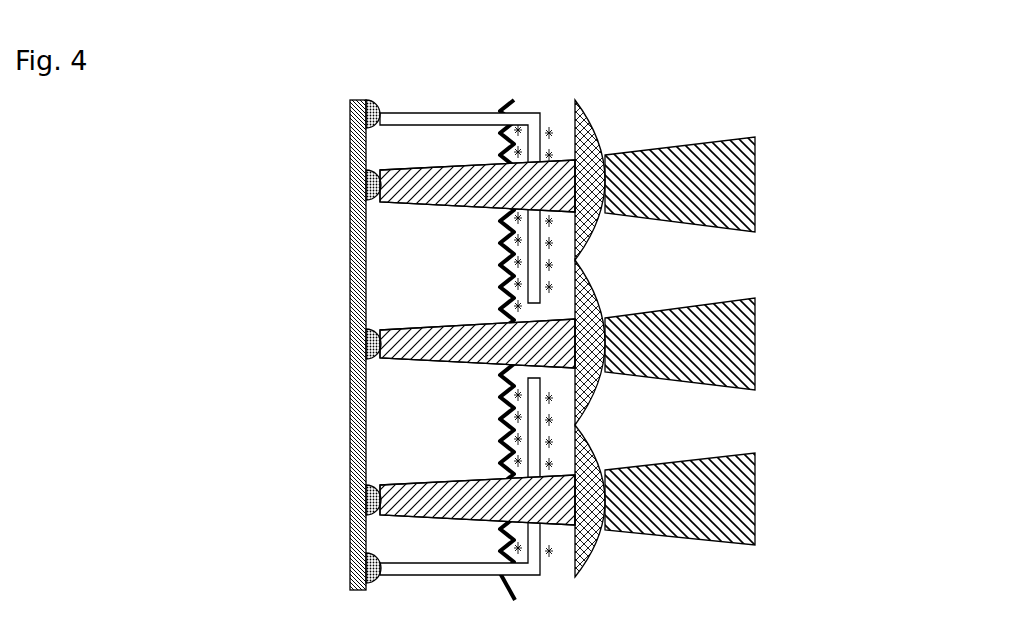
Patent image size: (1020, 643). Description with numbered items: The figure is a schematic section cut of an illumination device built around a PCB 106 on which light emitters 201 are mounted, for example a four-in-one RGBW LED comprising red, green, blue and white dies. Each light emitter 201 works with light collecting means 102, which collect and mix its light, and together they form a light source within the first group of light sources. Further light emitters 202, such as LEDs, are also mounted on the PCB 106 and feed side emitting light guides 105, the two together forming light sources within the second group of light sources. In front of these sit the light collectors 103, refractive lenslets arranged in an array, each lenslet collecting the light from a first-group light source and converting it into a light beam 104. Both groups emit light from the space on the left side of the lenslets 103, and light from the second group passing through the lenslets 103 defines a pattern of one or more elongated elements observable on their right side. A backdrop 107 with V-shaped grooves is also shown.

The light collecting means 102 is at (462, 204).
The light collectors 103 is at (593, 150).
The light beam 104 is at (703, 187).
The side emitting light guides 105 is at (446, 113).
The PCB 106 is at (350, 268).
The backdrop 107 is at (510, 103).
The light emitters 201 is at (381, 201).
The light emitters 202 is at (370, 102).